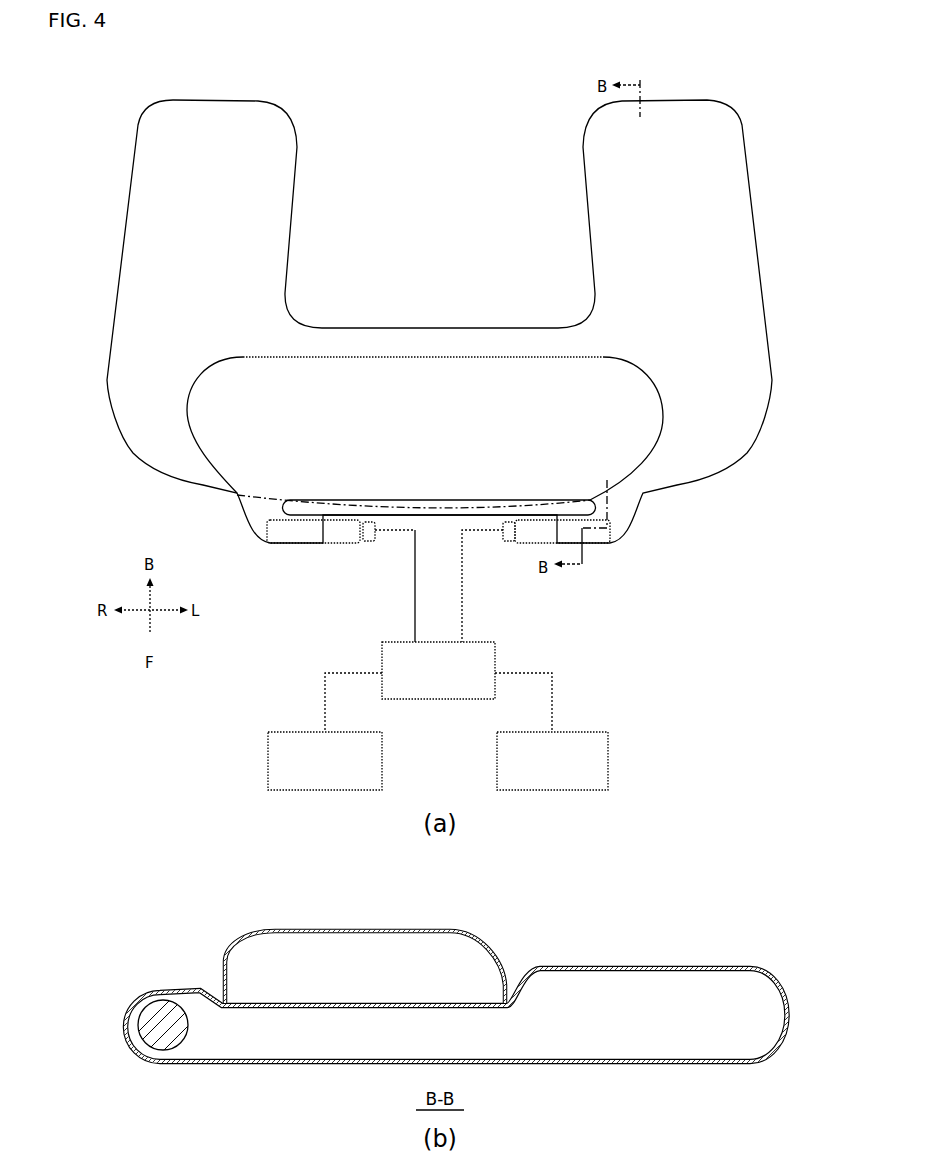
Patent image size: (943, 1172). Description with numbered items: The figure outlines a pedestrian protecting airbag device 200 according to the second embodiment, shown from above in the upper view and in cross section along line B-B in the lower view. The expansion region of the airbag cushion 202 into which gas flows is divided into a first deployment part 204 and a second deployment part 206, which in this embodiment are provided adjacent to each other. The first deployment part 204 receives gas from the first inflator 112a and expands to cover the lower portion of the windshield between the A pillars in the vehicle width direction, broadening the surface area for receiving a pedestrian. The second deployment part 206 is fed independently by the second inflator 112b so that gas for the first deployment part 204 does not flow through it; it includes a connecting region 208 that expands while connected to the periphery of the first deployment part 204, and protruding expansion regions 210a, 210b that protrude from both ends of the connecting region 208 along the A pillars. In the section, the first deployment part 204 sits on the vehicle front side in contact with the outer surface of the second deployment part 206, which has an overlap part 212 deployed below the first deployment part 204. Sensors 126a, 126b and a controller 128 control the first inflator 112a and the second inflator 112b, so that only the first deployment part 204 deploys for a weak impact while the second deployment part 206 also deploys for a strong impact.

The pedestrian protecting airbag device 200 is at (140, 95).
The airbag cushion 202 is at (148, 170).
The first deployment part 204 is at (220, 450).
The second deployment part 206 is at (743, 313).
The connecting region 208 is at (462, 340).
The protruding expansion region 210a is at (723, 167).
The protruding expansion region 210b is at (127, 253).
The overlap part 212 is at (363, 1043).
The first inflator 112a is at (340, 545).
The second inflator 112b is at (520, 545).
The sensor 126a is at (608, 757).
The sensor 126b is at (382, 757).
The controller 128 is at (497, 655).